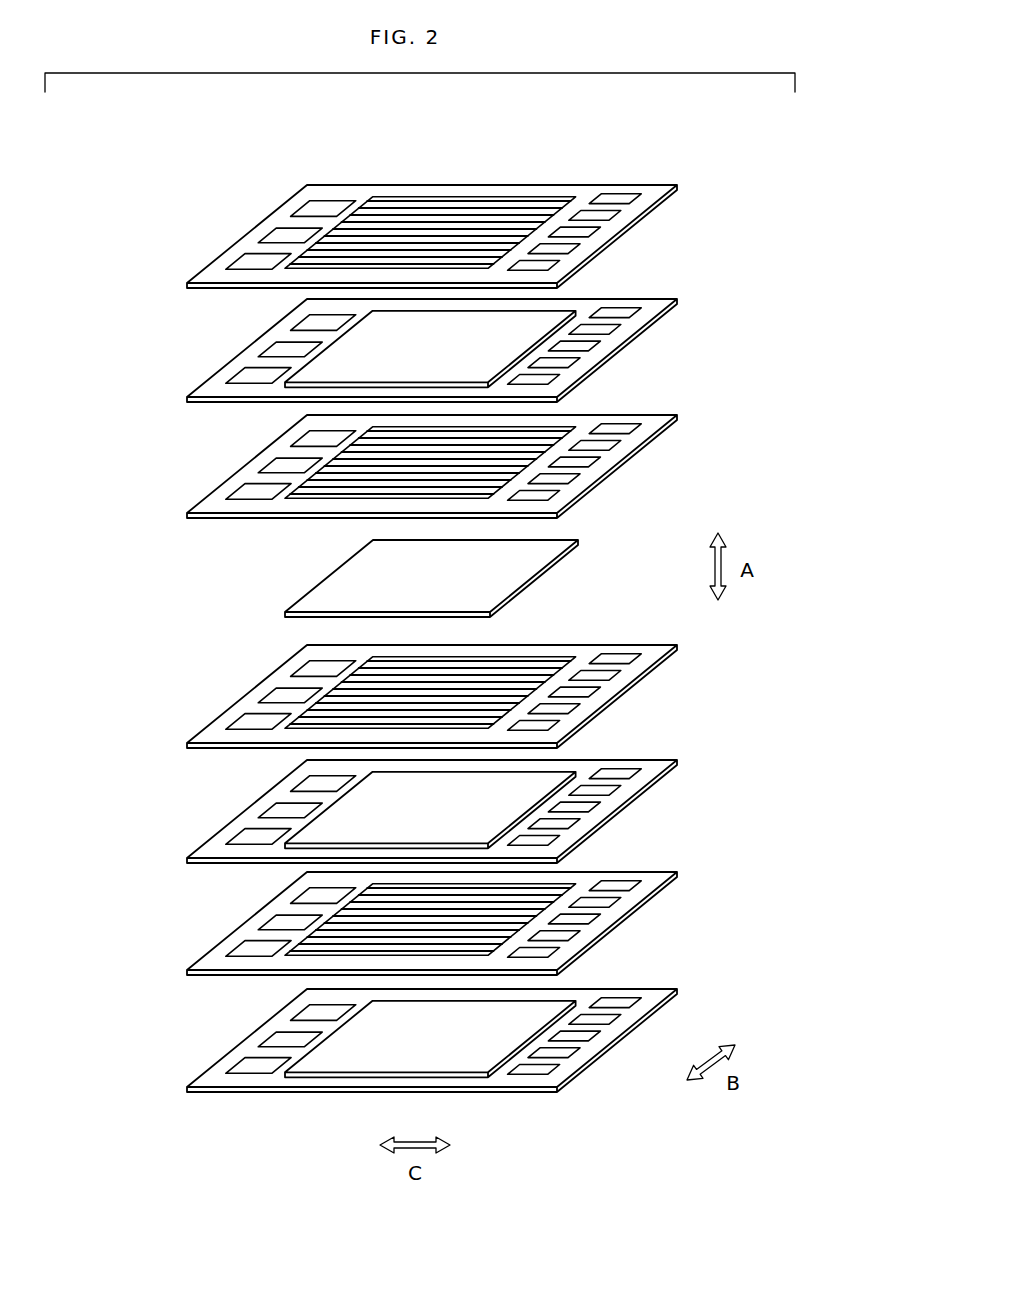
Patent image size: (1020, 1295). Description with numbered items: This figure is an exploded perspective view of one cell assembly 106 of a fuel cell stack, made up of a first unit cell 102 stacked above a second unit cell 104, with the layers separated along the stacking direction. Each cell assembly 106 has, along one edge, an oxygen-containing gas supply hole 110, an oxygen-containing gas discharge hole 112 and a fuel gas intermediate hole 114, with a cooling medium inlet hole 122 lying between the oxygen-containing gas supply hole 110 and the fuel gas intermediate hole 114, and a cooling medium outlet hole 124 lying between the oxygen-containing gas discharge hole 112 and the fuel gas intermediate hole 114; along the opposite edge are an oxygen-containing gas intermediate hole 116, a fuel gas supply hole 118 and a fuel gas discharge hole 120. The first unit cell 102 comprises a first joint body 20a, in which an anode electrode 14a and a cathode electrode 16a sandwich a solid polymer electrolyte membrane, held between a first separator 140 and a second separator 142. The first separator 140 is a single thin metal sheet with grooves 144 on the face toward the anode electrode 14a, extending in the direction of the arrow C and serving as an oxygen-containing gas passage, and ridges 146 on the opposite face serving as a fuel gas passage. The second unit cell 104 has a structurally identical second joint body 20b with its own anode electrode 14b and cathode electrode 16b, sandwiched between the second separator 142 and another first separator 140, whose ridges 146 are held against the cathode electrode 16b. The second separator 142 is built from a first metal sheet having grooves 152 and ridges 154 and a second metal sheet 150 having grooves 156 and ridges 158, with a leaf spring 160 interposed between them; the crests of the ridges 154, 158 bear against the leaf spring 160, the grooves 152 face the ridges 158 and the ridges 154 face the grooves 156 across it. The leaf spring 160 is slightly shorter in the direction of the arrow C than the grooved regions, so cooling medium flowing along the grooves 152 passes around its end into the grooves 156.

The cell assembly 106 is at (143, 113).
The first unit cell 102 is at (137, 200).
The second unit cell 104 is at (137, 515).
The first separator 140 is at (527, 193).
The ridges 146 is at (410, 215).
The fuel gas supply hole 118 is at (317, 193).
The oxygen-containing gas intermediate hole 116 is at (285, 220).
The fuel gas discharge hole 120 is at (253, 252).
The oxygen-containing gas supply hole 110 is at (612, 205).
The cooling medium inlet hole 122 is at (637, 228).
The fuel gas intermediate hole 114 is at (613, 233).
The cooling medium outlet hole 124 is at (580, 255).
The oxygen-containing gas discharge hole 112 is at (525, 280).
The first joint body 20a is at (286, 322).
The anode electrode 14a is at (325, 370).
The cathode electrode 16a is at (397, 405).
The grooves 144 is at (447, 285).
The second separator 142 is at (708, 457).
The grooves 152 is at (547, 432).
The ridges 154 is at (332, 518).
The leaf spring 160 is at (553, 557).
The second metal sheet 150 is at (645, 655).
The ridges 158 is at (555, 665).
The second joint body 20b is at (684, 744).
The anode electrode 14b is at (547, 777).
The cathode electrode 16b is at (393, 868).
The grooves 156 is at (462, 745).